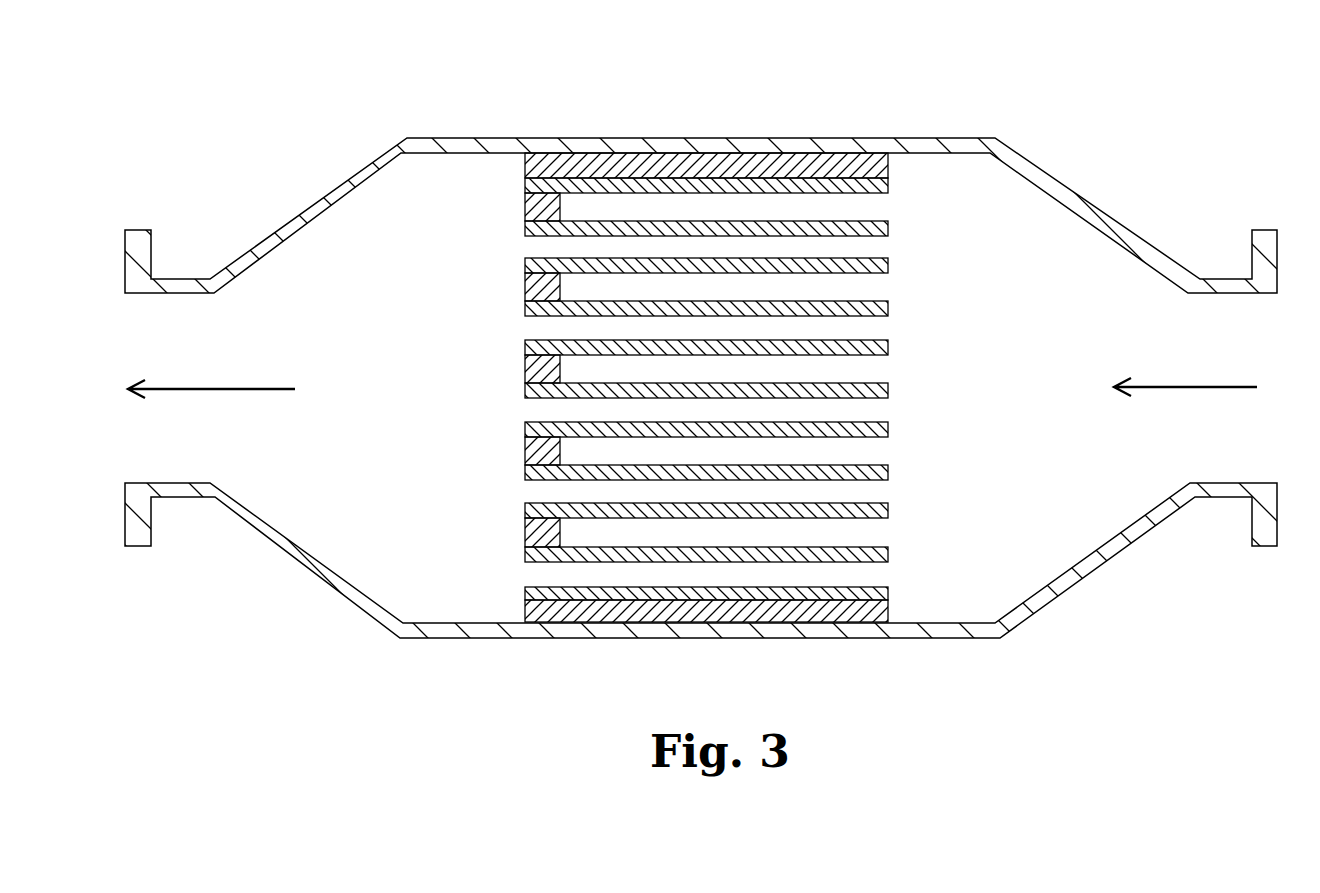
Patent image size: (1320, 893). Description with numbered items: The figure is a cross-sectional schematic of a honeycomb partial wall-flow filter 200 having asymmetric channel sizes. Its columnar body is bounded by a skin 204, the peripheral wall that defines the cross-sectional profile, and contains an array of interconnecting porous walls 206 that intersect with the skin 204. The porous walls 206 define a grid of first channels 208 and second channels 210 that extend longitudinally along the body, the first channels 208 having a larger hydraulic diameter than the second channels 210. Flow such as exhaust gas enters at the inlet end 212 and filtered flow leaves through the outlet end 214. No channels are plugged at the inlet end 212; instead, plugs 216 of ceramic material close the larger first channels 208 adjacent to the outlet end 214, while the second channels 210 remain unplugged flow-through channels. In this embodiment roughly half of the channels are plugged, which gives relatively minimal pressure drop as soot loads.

The honeycomb partial wall-flow filter 200 is at (1007, 90).
The skin 204 is at (832, 590).
The porous walls 206 is at (696, 440).
The first channels 208 is at (880, 450).
The second channels 210 is at (522, 246).
The inlet end 212 is at (903, 457).
The outlet end 214 is at (495, 432).
The plugs 216 is at (524, 452).